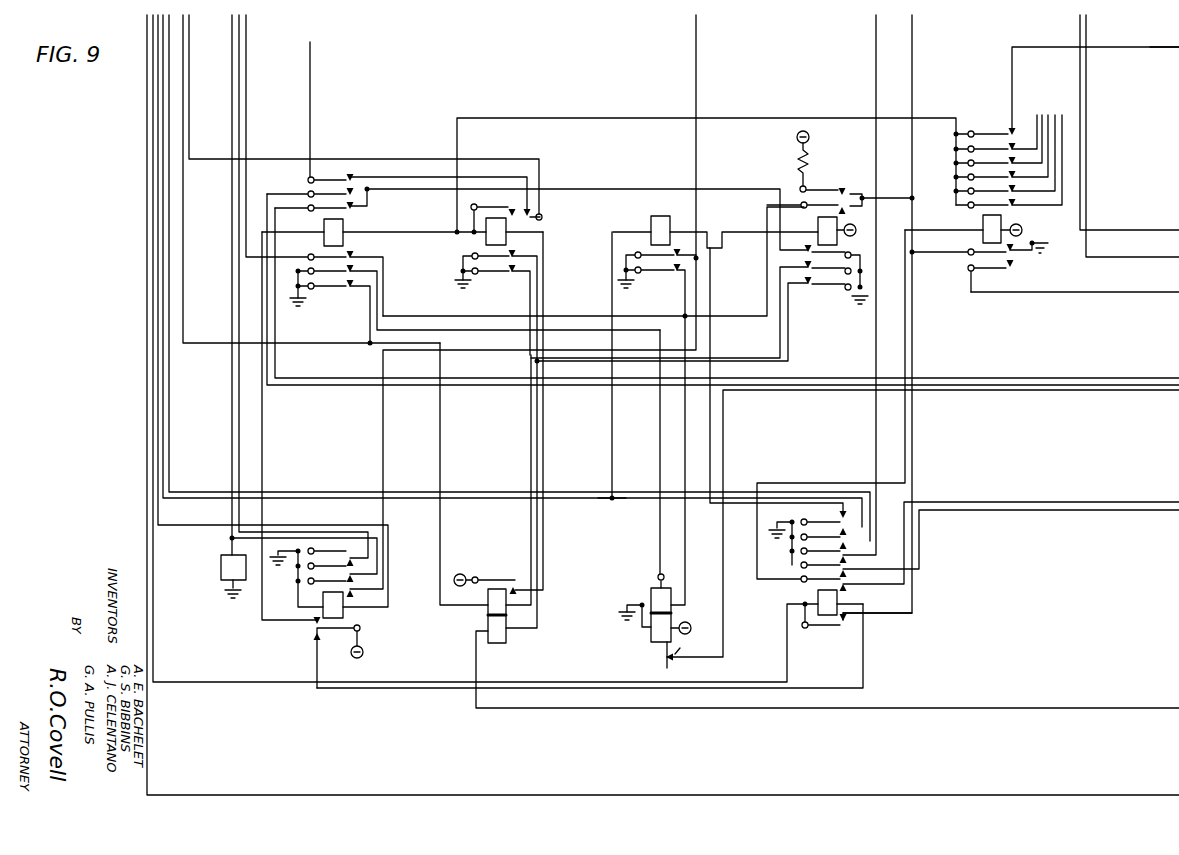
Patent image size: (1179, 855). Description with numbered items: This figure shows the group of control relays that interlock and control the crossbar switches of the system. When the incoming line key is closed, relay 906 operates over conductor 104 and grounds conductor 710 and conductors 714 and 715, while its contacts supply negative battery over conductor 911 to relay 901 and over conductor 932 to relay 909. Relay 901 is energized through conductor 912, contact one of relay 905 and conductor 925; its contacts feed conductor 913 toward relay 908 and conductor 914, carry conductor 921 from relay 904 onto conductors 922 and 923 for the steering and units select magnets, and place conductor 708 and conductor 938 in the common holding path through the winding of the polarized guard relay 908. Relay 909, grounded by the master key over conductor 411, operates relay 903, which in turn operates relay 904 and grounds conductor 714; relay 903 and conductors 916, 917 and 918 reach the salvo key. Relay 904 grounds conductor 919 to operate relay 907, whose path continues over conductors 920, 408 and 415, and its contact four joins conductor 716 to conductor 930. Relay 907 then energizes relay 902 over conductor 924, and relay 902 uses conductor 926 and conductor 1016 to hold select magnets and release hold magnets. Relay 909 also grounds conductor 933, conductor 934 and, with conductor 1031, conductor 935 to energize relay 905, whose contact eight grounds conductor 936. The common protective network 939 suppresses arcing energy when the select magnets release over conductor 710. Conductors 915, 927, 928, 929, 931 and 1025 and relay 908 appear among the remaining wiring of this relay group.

The conductor 104 is at (158, 415).
The conductor 408 is at (183, 52).
The conductor 411 is at (153, 447).
The conductor 415 is at (1080, 28).
The conductor 708 is at (246, 28).
The conductor 710 is at (232, 70).
The conductor 714 is at (696, 28).
The conductor 715 is at (239, 50).
The conductor 716 is at (912, 28).
The relay 901 is at (320, 224).
The relay 902 is at (486, 246).
The relay 903 is at (651, 216).
The relay 904 is at (818, 219).
The relay 905 is at (982, 216).
The relay 906 is at (343, 615).
The relay 907 is at (488, 622).
The relay 908 is at (650, 592).
The relay 909 is at (818, 594).
The conductor 911 is at (262, 605).
The conductor 912 is at (524, 118).
The conductor 913 is at (660, 548).
The conductor 914 is at (1052, 394).
The conductor 915 is at (710, 297).
The conductor 916 is at (612, 428).
The conductor 917 is at (163, 385).
The conductor 918 is at (613, 498).
The conductor 919 is at (531, 545).
The conductor 920 is at (440, 515).
The conductor 921 is at (568, 189).
The conductor 922 is at (1176, 376).
The conductor 923 is at (1110, 376).
The conductor 924 is at (545, 428).
The conductor 925 is at (1164, 49).
The conductor 926 is at (189, 22).
The conductor 927 is at (530, 300).
The conductor 928 is at (788, 335).
The conductor 929 is at (382, 177).
The conductor 930 is at (740, 318).
The conductor 931 is at (169, 365).
The conductor 932 is at (863, 648).
The conductor 933 is at (876, 28).
The conductor 934 is at (1124, 512).
The conductor 935 is at (907, 333).
The conductor 936 is at (1116, 294).
The conductor 938 is at (688, 542).
The common protective network 939 is at (221, 562).
The conductor 1016 is at (1171, 44).
The conductor 1025 is at (147, 475).
The conductor 1031 is at (1076, 504).